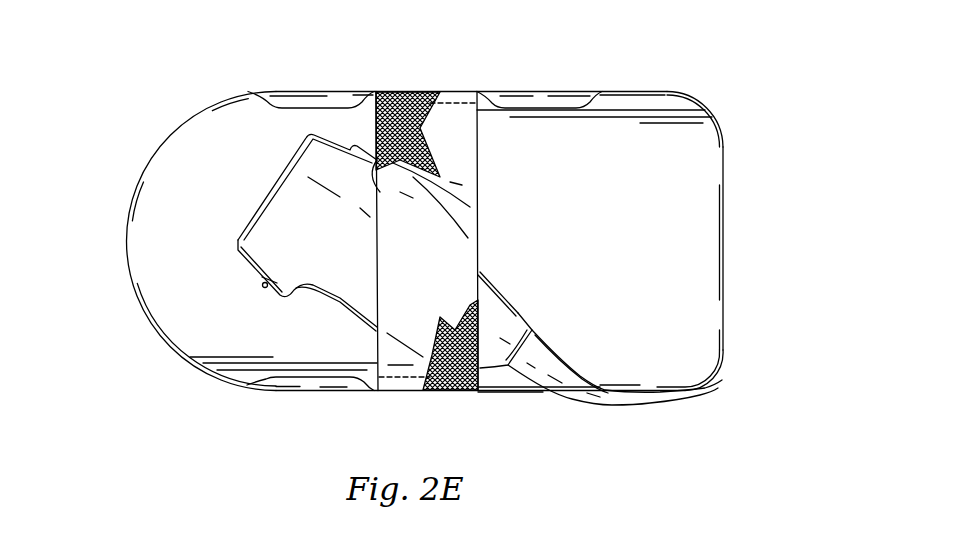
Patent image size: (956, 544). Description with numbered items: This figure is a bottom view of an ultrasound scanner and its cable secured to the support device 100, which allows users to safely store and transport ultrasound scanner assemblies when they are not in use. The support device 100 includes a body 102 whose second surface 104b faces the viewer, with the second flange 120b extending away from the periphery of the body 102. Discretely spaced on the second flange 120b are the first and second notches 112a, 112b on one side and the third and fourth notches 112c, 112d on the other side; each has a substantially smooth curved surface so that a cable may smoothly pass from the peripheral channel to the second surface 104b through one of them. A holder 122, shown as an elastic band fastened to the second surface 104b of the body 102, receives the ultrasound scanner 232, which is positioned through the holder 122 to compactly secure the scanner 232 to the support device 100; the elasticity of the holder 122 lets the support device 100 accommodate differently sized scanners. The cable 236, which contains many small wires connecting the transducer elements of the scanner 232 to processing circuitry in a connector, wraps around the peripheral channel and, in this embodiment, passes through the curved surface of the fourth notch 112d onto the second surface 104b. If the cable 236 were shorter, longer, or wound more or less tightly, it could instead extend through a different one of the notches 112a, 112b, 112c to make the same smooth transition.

The support device 100 is at (705, 58).
The body 102 is at (200, 138).
The second surface 104b is at (693, 223).
The first notch 112a is at (313, 107).
The second notch 112b is at (553, 104).
The third notch 112c is at (320, 380).
The fourth notch 112d is at (517, 372).
The second flange 120b is at (705, 108).
The holder 122 is at (447, 120).
The ultrasound scanner 232 is at (283, 240).
The cable 236 is at (620, 405).